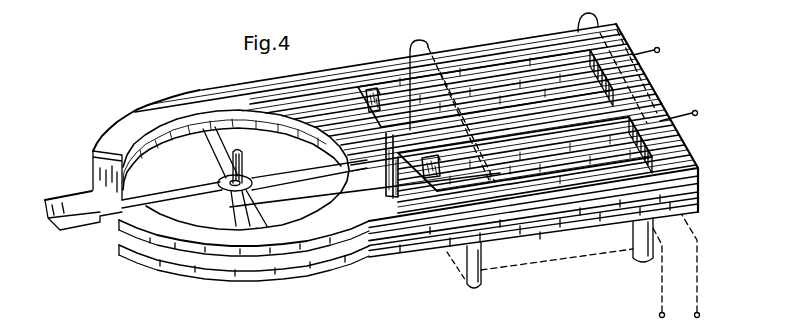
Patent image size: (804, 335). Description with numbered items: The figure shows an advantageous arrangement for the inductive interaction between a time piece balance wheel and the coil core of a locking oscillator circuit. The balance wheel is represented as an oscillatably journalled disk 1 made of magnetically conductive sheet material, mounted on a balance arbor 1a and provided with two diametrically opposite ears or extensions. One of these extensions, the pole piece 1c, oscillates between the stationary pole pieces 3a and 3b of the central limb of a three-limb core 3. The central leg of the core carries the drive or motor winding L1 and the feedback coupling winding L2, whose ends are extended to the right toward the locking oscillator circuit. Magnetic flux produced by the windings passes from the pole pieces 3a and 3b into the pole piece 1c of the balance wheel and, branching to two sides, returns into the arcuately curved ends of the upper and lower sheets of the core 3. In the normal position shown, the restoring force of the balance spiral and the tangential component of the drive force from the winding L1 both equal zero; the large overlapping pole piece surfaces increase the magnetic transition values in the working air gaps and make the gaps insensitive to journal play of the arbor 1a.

The disk 1 is at (93, 182).
The balance arbor 1a is at (243, 158).
The pole piece of the balance wheel 1c is at (395, 199).
The three-limb core 3 is at (572, 220).
The pole piece 3a is at (360, 100).
The pole piece 3b is at (421, 192).
The drive or motor winding L1 is at (573, 273).
The feedback coupling winding L2 is at (554, 97).